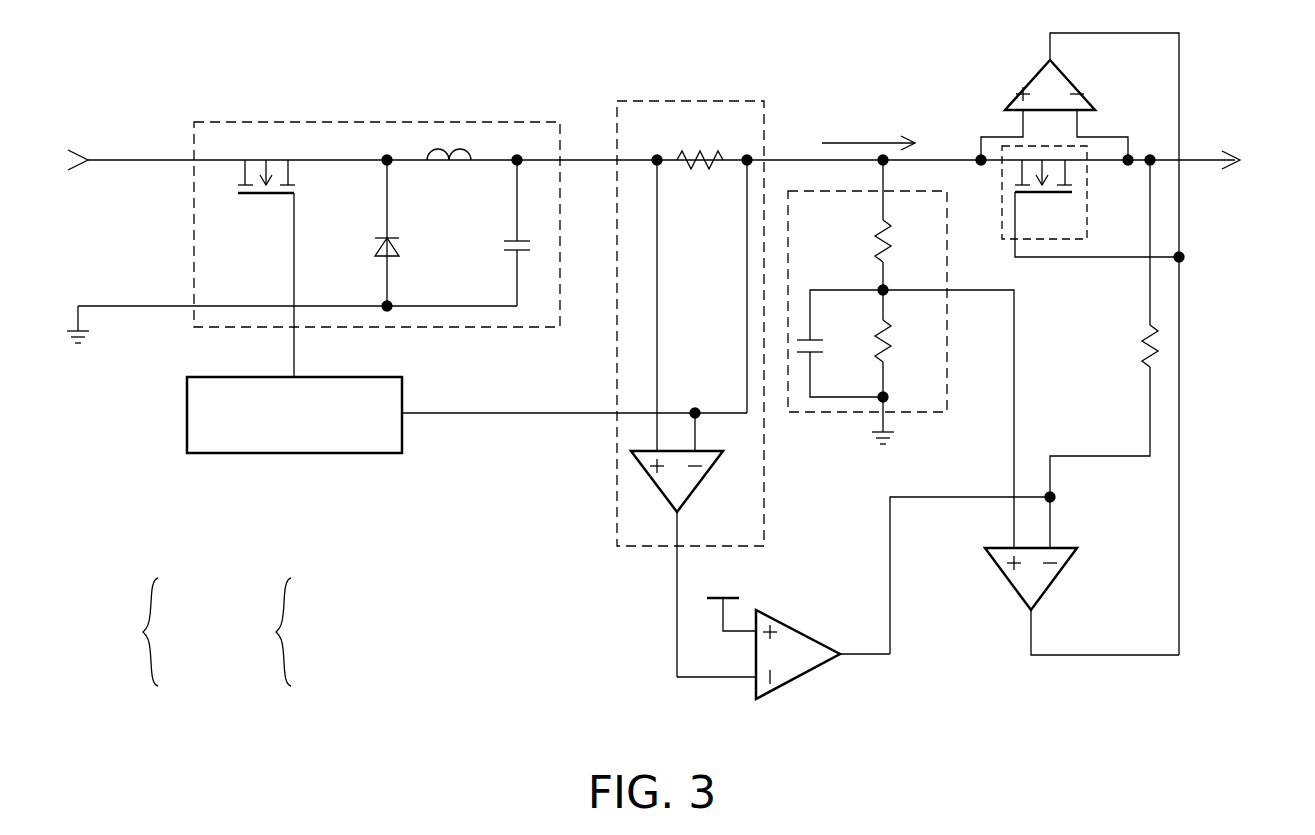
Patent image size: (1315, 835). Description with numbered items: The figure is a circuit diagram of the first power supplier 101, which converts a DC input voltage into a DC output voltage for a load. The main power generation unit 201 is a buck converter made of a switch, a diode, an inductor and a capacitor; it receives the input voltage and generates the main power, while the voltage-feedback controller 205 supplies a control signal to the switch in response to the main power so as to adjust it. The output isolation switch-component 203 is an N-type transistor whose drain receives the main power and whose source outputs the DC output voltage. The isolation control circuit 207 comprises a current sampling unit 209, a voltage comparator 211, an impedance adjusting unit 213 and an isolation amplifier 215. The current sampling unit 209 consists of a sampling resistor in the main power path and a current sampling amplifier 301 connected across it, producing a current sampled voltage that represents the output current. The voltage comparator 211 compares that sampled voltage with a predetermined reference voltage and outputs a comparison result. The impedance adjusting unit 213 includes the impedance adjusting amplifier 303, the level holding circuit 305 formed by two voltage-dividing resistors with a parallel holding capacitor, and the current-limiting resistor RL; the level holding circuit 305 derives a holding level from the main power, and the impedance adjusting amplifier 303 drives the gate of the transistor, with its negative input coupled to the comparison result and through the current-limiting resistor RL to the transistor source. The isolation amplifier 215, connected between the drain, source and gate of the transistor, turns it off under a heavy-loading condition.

The first power supplier 101 is at (1226, 746).
The main power generation unit 201 is at (360, 120).
The output isolation switch-component 203 is at (1090, 180).
The voltage-feedback controller 205 is at (280, 453).
The isolation control circuit 207 is at (151, 631).
The current sampling unit 209 is at (680, 98).
The voltage comparator 211 is at (805, 673).
The impedance adjusting unit 213 is at (285, 632).
The isolation amplifier 215 is at (1076, 86).
The current sampling amplifier 301 is at (650, 483).
The impedance adjusting amplifier 303 is at (1058, 580).
The level holding circuit 305 is at (947, 370).
The current-limiting resistor RL is at (1129, 261).